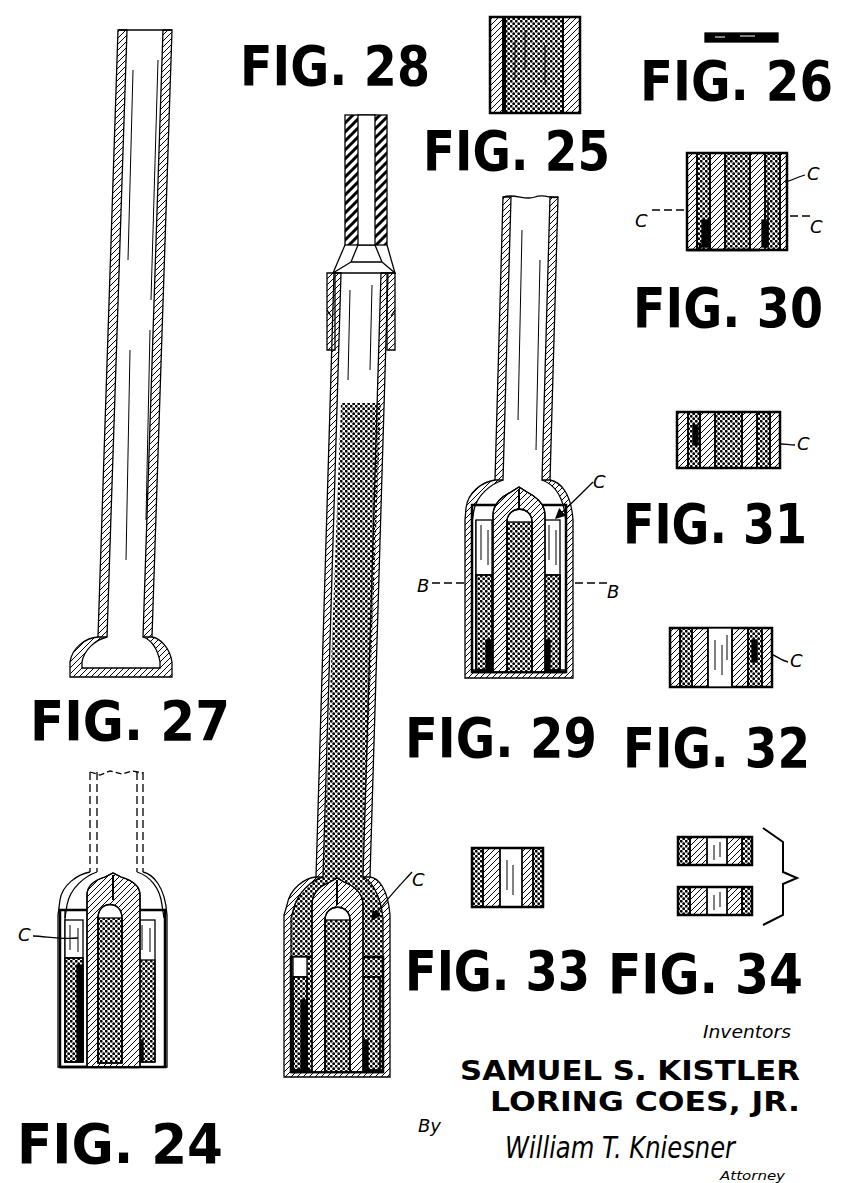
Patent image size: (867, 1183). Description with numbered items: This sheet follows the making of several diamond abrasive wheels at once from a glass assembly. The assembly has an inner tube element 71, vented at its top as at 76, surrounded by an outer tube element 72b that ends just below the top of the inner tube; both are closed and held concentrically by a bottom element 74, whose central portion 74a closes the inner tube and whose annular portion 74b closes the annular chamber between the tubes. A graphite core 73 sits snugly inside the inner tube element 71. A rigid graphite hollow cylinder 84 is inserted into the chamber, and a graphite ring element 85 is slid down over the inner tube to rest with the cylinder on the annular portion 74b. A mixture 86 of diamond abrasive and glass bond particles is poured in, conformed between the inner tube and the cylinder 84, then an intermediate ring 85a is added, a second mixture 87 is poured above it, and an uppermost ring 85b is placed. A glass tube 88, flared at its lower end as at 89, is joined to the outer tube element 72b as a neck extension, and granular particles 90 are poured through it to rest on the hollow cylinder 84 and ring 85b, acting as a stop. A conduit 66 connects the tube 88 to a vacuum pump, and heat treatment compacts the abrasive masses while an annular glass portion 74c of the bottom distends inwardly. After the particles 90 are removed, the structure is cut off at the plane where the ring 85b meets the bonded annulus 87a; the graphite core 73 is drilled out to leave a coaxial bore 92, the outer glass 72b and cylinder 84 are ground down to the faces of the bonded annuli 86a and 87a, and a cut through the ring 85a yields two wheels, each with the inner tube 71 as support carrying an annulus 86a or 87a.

In FIG. 28, the conduit 66 is at (345, 165).
In FIG. 28, the inner tube element 71 is at (326, 946).
In FIG. 24, the inner tube element 71 is at (140, 958).
In FIG. 29, the inner tube element 71 is at (532, 518).
In FIG. 30, the inner tube element 71 is at (712, 153).
In FIG. 31, the inner tube element 71 is at (715, 412).
In FIG. 32, the inner tube element 71 is at (702, 628).
In FIG. 33, the inner tube element 71 is at (515, 908).
In FIG. 34, the inner tube element 71 is at (700, 838).
In FIG. 28, the outer tube element 72b is at (292, 938).
In FIG. 24, the outer tube element 72b is at (62, 919).
In FIG. 29, the outer tube element 72b is at (472, 530).
In FIG. 30, the outer tube element 72b is at (690, 160).
In FIG. 31, the outer tube element 72b is at (680, 424).
In FIG. 32, the outer tube element 72b is at (675, 687).
In FIG. 28, the graphite core 73 is at (313, 906).
In FIG. 24, the graphite core 73 is at (125, 946).
In FIG. 29, the graphite core 73 is at (495, 554).
In FIG. 30, the graphite core 73 is at (738, 153).
In FIG. 31, the graphite core 73 is at (726, 468).
In FIG. 28, the bottom element 74 is at (386, 1072).
In FIG. 24, the bottom element 74 is at (160, 1067).
In FIG. 29, the bottom element 74 is at (540, 678).
In FIG. 30, the bottom element 74 is at (782, 251).
In FIG. 28, the central portion of bottom element 74a is at (336, 1078).
In FIG. 24, the central portion of bottom element 74a is at (100, 1068).
In FIG. 29, the central portion of bottom element 74a is at (513, 678).
In FIG. 30, the central portion of bottom element 74a is at (738, 251).
In FIG. 28, the annular portion of bottom element 74b is at (300, 1077).
In FIG. 24, the annular portion of bottom element 74b is at (68, 1068).
In FIG. 29, the annular portion of bottom element 74b is at (478, 678).
In FIG. 30, the annular portion of bottom element 74b is at (695, 252).
In FIG. 28, the distended annular glass portion 74c is at (368, 1078).
In FIG. 29, the distended annular glass portion 74c is at (553, 677).
In FIG. 30, the distended annular glass portion 74c is at (705, 250).
In FIG. 28, the vent 76 is at (300, 896).
In FIG. 24, the vent 76 is at (130, 896).
In FIG. 29, the vent 76 is at (478, 504).
In FIG. 28, the hollow cylinder 84 is at (378, 1008).
In FIG. 24, the hollow cylinder 84 is at (155, 1010).
In FIG. 29, the hollow cylinder 84 is at (560, 640).
In FIG. 25, the hollow cylinder 84 is at (580, 50).
In FIG. 30, the hollow cylinder 84 is at (783, 158).
In FIG. 31, the hollow cylinder 84 is at (683, 412).
In FIG. 32, the hollow cylinder 84 is at (758, 628).
In FIG. 28, the ring element 85 is at (294, 1058).
In FIG. 24, the ring element 85 is at (68, 1056).
In FIG. 29, the ring element 85 is at (477, 658).
In FIG. 26, the ring element 85 is at (778, 38).
In FIG. 30, the ring element 85 is at (783, 212).
In FIG. 28, the intermediate ring 85a is at (294, 1018).
In FIG. 24, the intermediate ring 85a is at (70, 1012).
In FIG. 29, the intermediate ring 85a is at (477, 618).
In FIG. 30, the intermediate ring 85a is at (692, 180).
In FIG. 31, the intermediate ring 85a is at (680, 444).
In FIG. 32, the intermediate ring 85a is at (680, 650).
In FIG. 33, the intermediate ring 85a is at (543, 875).
In FIG. 28, the uppermost ring 85b is at (294, 970).
In FIG. 24, the uppermost ring 85b is at (68, 962).
In FIG. 29, the uppermost ring 85b is at (553, 570).
In FIG. 24, the abrasive mixture 86 is at (75, 1032).
In FIG. 28, the bonded abrasive annulus 86a is at (294, 1037).
In FIG. 29, the bonded abrasive annulus 86a is at (477, 637).
In FIG. 30, the bonded abrasive annulus 86a is at (690, 200).
In FIG. 31, the bonded abrasive annulus 86a is at (680, 458).
In FIG. 32, the bonded abrasive annulus 86a is at (748, 687).
In FIG. 33, the bonded abrasive annulus 86a is at (543, 898).
In FIG. 34, the bonded abrasive annulus 86a is at (678, 900).
In FIG. 24, the abrasive mixture for next wheel 87 is at (70, 988).
In FIG. 28, the bonded abrasive annulus 87a is at (294, 992).
In FIG. 29, the bonded abrasive annulus 87a is at (560, 618).
In FIG. 30, the bonded abrasive annulus 87a is at (775, 153).
In FIG. 31, the bonded abrasive annulus 87a is at (760, 412).
In FIG. 32, the bonded abrasive annulus 87a is at (750, 628).
In FIG. 33, the bonded abrasive annulus 87a is at (560, 828).
In FIG. 34, the bonded abrasive annulus 87a is at (678, 850).
In FIG. 27, the glass tube 88 is at (110, 262).
In FIG. 28, the glass tube 88 is at (333, 470).
In FIG. 24, the glass tube 88 is at (90, 822).
In FIG. 29, the glass tube 88 is at (500, 332).
In FIG. 27, the flared lower end 89 is at (78, 640).
In FIG. 28, the flared lower end 89 is at (298, 882).
In FIG. 24, the flared lower end 89 is at (75, 882).
In FIG. 29, the flared lower end 89 is at (474, 486).
In FIG. 28, the granular particles 90 is at (348, 567).
In FIG. 32, the coaxial bore 92 is at (715, 628).
In FIG. 33, the coaxial bore 92 is at (515, 848).
In FIG. 34, the coaxial bore 92 is at (714, 838).